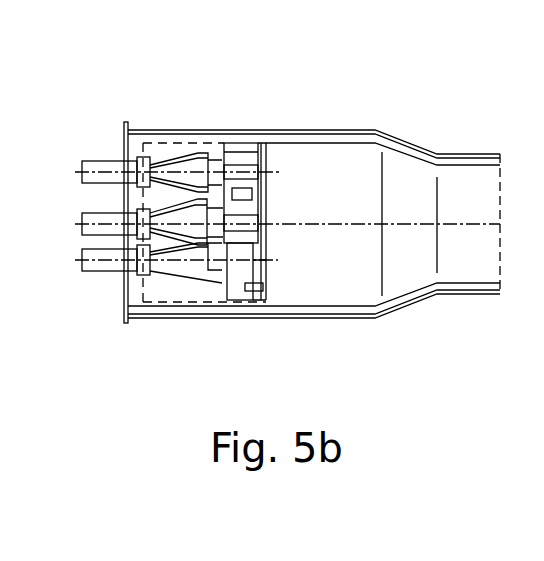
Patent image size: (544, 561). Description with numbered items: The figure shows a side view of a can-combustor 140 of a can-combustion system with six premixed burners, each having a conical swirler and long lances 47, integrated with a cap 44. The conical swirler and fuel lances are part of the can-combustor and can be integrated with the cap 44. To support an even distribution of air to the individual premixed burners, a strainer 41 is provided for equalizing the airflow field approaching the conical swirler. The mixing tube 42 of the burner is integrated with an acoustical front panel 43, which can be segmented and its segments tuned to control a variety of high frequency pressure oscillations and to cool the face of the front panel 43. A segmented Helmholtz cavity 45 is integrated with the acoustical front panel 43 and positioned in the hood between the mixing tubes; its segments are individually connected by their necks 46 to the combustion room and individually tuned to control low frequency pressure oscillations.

The can-combustor 140 is at (372, 130).
The cap 44 is at (121, 141).
The long lances 47 is at (168, 160).
The strainer 41 is at (190, 142).
The mixing tube 42 is at (238, 148).
The acoustical front panel 43 is at (269, 149).
The segmented Helmholtz cavity 45 is at (243, 280).
The necks 46 is at (265, 288).